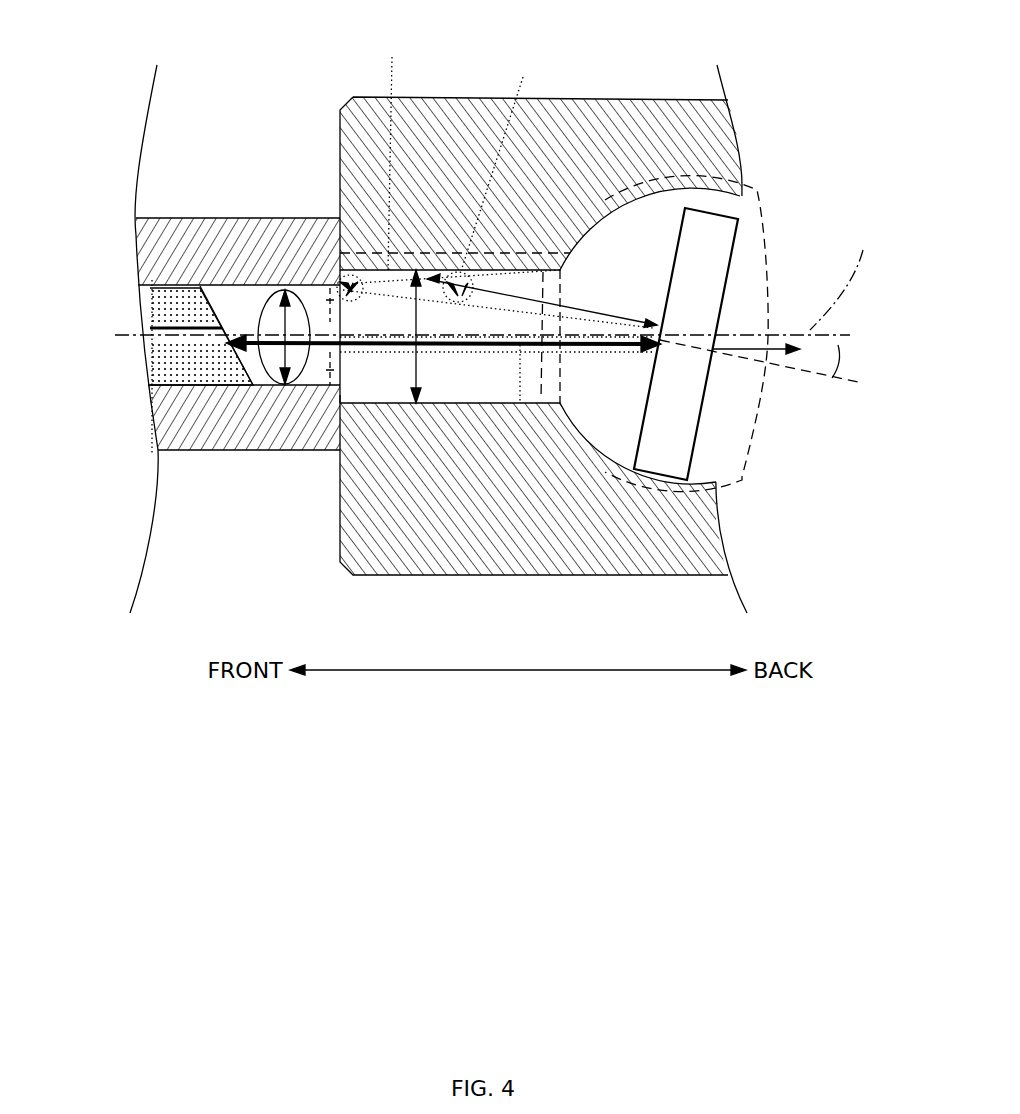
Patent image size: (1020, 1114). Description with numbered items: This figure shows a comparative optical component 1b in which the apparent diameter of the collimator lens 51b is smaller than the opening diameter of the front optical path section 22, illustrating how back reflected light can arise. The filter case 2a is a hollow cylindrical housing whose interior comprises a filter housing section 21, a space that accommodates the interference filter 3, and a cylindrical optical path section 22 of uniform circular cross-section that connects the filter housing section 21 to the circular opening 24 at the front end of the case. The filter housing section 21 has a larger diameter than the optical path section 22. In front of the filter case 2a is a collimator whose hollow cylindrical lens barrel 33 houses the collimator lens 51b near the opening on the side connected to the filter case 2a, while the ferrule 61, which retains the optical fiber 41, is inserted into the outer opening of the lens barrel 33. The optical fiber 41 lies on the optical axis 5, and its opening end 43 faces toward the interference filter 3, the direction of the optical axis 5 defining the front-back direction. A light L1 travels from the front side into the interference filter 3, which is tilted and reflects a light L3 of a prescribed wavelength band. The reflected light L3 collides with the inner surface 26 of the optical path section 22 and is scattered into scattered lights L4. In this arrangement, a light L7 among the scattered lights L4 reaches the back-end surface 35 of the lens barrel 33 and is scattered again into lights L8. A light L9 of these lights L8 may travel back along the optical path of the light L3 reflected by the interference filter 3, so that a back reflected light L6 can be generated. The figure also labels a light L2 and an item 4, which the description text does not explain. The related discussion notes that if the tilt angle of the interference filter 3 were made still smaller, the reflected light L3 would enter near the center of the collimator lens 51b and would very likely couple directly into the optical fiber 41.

The optical component 1b is at (624, 70).
The filter case 2a is at (452, 140).
The interference filter 3 is at (712, 253).
The lens optical axis 4 is at (807, 372).
The optical axis 5 is at (837, 275).
The filter housing section 21 is at (740, 478).
The optical path section 22 is at (324, 380).
The opening 24 is at (325, 322).
The inner surface 26 is at (518, 272).
The lens barrel 33 is at (216, 240).
The back-end surface 35 is at (348, 395).
The optical fiber 41 is at (158, 337).
The opening end 43 is at (214, 345).
The fiber insertion hole 51b is at (280, 288).
The ferrule 61 is at (150, 368).
The light L1 is at (600, 345).
The emitted light L2 is at (780, 315).
The reflected light L3 is at (573, 292).
The scattered lights L4 is at (499, 159).
The back reflected light L6 is at (520, 405).
The light L7 is at (392, 150).
The lights L8 is at (362, 285).
The light L9 is at (437, 288).